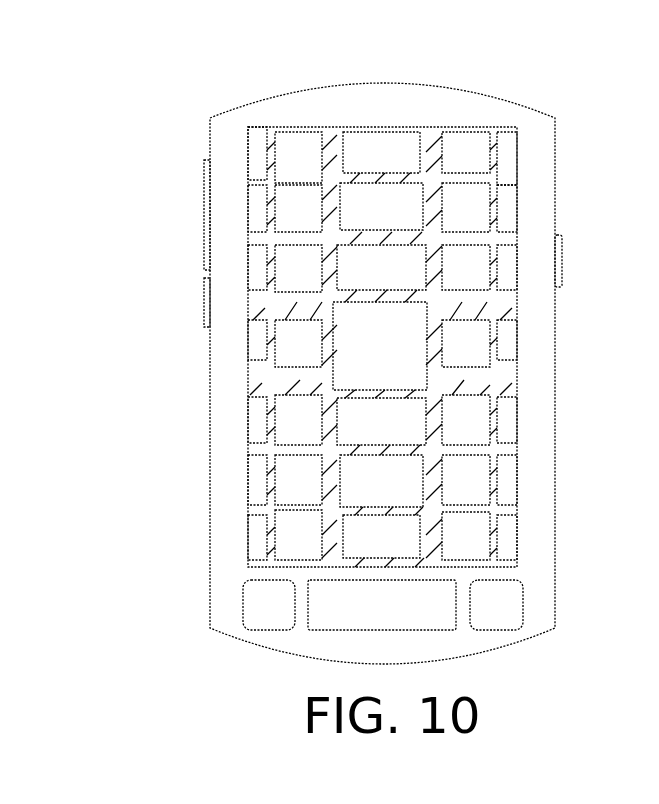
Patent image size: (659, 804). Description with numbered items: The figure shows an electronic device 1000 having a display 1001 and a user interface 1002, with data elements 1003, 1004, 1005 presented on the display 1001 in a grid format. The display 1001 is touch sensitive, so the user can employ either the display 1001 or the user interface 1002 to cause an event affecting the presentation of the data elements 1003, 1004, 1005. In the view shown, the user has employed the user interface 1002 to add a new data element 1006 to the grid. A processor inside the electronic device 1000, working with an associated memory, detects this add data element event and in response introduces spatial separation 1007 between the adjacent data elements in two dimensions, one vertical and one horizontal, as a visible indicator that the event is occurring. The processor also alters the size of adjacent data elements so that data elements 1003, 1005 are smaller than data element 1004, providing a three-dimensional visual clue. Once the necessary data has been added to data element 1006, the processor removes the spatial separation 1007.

The electronic device 1000 is at (556, 436).
The display 1001 is at (530, 228).
The user interface 1002 is at (550, 605).
The data element 1003 is at (297, 127).
The data element 1004 is at (380, 127).
The data element 1005 is at (465, 127).
The data element 1006 is at (397, 361).
The spatial separation 1007 is at (517, 307).